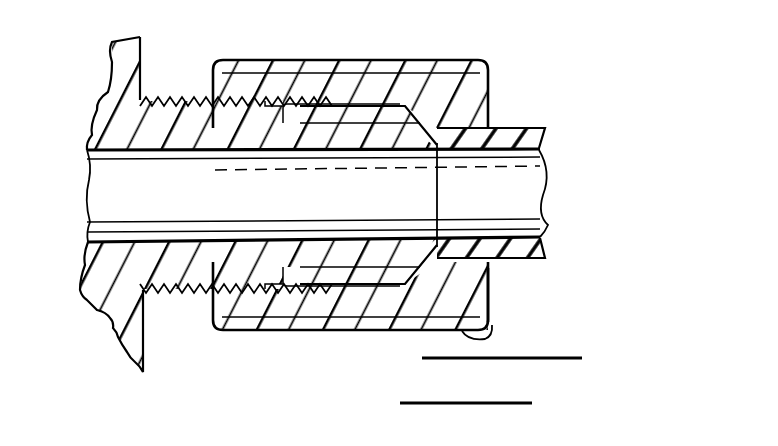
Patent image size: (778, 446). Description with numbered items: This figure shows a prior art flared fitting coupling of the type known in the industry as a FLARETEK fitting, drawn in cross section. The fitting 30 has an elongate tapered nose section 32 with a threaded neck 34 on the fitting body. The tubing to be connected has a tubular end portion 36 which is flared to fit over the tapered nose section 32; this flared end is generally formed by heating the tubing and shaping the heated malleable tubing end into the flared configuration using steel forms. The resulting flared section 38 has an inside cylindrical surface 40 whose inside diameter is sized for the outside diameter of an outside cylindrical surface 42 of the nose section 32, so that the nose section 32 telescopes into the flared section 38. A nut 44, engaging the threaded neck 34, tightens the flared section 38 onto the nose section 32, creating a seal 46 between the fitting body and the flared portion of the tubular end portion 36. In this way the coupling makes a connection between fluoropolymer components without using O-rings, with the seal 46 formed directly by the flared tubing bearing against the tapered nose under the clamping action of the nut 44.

The fitting 30 is at (299, 54).
The elongate tapered nose section 32 is at (250, 250).
The threaded neck 34 is at (190, 295).
The tubular end portion 36 is at (508, 128).
The flared section 38 is at (363, 117).
The inside cylindrical surface 40 is at (437, 195).
The outside cylindrical surface 42 is at (367, 267).
The nut 44 is at (497, 300).
The seal 46 is at (467, 332).